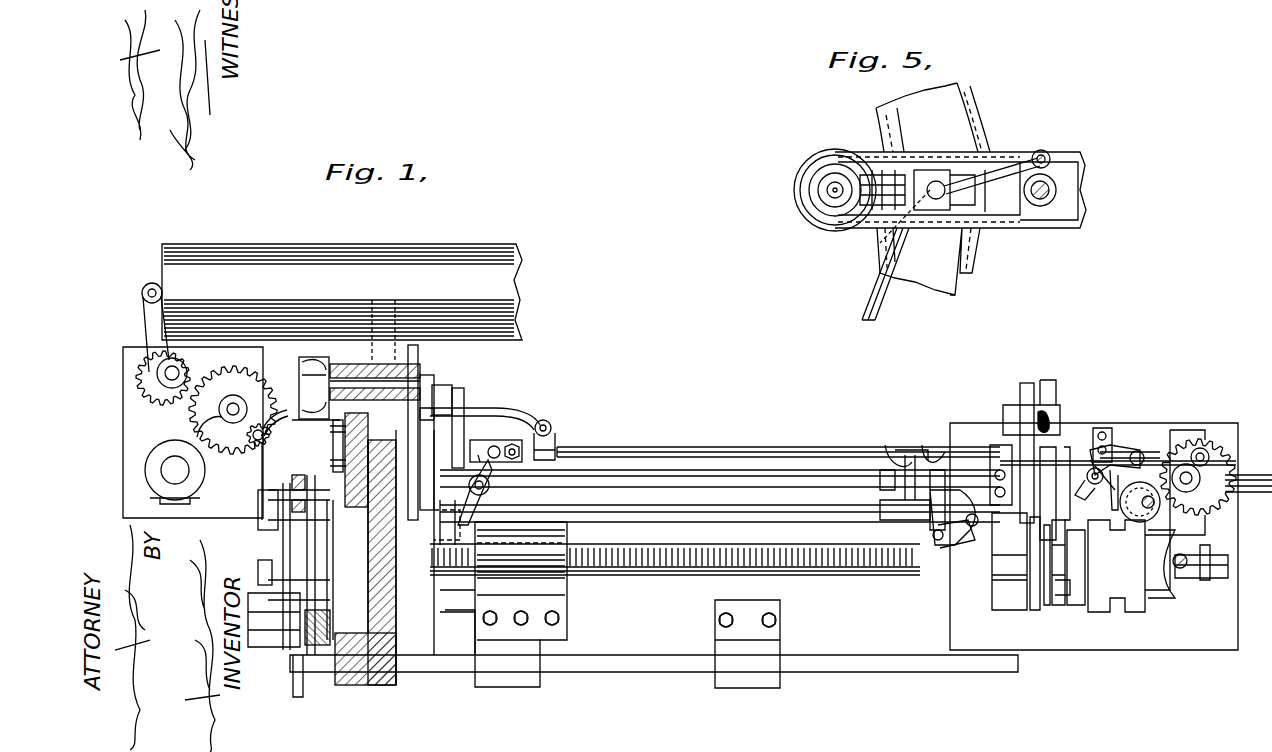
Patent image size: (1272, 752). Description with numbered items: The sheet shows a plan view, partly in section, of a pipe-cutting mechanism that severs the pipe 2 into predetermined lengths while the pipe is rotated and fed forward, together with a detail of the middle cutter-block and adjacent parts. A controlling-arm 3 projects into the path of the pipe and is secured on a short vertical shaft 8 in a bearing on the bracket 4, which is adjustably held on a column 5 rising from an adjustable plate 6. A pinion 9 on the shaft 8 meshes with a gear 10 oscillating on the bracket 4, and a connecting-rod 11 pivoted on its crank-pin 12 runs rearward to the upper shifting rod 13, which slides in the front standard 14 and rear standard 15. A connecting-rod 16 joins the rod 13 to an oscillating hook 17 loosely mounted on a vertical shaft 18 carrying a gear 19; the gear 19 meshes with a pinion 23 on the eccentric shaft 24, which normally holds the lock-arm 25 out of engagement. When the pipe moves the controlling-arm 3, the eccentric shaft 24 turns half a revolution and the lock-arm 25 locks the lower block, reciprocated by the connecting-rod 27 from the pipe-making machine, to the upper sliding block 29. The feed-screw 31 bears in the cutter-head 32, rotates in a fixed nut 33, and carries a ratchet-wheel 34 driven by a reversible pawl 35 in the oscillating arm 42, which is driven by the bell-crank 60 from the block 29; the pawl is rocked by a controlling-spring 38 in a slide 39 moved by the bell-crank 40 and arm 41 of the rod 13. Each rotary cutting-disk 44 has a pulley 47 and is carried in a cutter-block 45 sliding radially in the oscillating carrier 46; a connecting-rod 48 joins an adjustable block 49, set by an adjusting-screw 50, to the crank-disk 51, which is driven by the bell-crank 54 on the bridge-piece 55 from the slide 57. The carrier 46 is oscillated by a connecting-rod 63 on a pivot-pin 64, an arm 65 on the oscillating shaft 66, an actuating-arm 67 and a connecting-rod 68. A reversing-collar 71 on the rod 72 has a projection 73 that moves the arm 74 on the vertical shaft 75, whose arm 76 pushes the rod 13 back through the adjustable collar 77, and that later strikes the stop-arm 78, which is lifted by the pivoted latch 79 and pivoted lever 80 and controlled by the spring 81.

In FIG. 1, the pipe 2 is at (342, 302).
In FIG. 1, the controlling-arm 3 is at (148, 319).
In FIG. 1, the bracket 4 is at (166, 430).
In FIG. 1, the column 5 is at (170, 478).
In FIG. 1, the adjustable plate 6 is at (187, 490).
In FIG. 1, the vertical shaft 8 is at (173, 381).
In FIG. 1, the pinion 9 is at (152, 392).
In FIG. 1, the gear 10 is at (233, 410).
In FIG. 1, the connecting-rod 11 is at (486, 414).
In FIG. 1, the crank-pin 12 is at (277, 465).
In FIG. 1, the shifting rod 13 is at (660, 452).
In FIG. 1, the front standard 14 is at (460, 410).
In FIG. 1, the rear standard 15 is at (1100, 612).
In FIG. 1, the connecting-rod 16 is at (1150, 452).
In FIG. 1, the oscillating hook 17 is at (1205, 448).
In FIG. 1, the vertical shaft 18 is at (1186, 492).
In FIG. 1, the gear 19 is at (1212, 492).
In FIG. 1, the pinion 23 is at (1158, 580).
In FIG. 1, the eccentric shaft 24 is at (1140, 450).
In FIG. 1, the lock-arm 25 is at (1175, 598).
In FIG. 1, the connecting-rod 27 is at (1188, 582).
In FIG. 1, the upper sliding block 29 is at (1116, 566).
In FIG. 1, the feed-screw 31 is at (648, 576).
In FIG. 1, the cutter-head 32 is at (365, 571).
In FIG. 5, the cutter-head 32 is at (975, 254).
In FIG. 1, the fixed nut 33 is at (565, 598).
In FIG. 1, the ratchet-wheel 34 is at (1060, 610).
In FIG. 1, the reversible pawl 35 is at (1035, 580).
In FIG. 1, the controlling-spring 38 is at (1055, 592).
In FIG. 1, the slide 39 is at (1052, 470).
In FIG. 1, the bell-crank 40 is at (1100, 452).
In FIG. 1, the arm 41 is at (1117, 495).
In FIG. 1, the oscillating arm 42 is at (1050, 590).
In FIG. 1, the rotary cutting-disk 44 is at (418, 352).
In FIG. 5, the rotary cutting-disk 44 is at (800, 200).
In FIG. 1, the cutter-block 45 is at (340, 446).
In FIG. 5, the cutter-block 45 is at (870, 168).
In FIG. 1, the oscillating carrier 46 is at (365, 505).
In FIG. 5, the oscillating carrier 46 is at (933, 189).
In FIG. 1, the pulley 47 is at (300, 374).
In FIG. 5, the pulley 47 is at (818, 205).
In FIG. 1, the connecting-rod 48 is at (290, 560).
In FIG. 5, the connecting-rod 48 is at (1048, 152).
In FIG. 1, the adjustable block 49 is at (325, 455).
In FIG. 5, the adjustable block 49 is at (992, 152).
In FIG. 5, the adjusting-screw 50 is at (926, 192).
In FIG. 1, the crank-disk 51 is at (290, 605).
In FIG. 1, the bell-crank 54 is at (288, 530).
In FIG. 1, the bridge-piece 55 is at (318, 471).
In FIG. 1, the slide 57 is at (315, 683).
In FIG. 1, the bell-crank 60 is at (998, 578).
In FIG. 1, the connecting-rod 63 is at (450, 432).
In FIG. 5, the connecting-rod 63 is at (868, 293).
In FIG. 1, the pivot-pin 64 is at (432, 512).
In FIG. 1, the arm 65 is at (440, 400).
In FIG. 1, the oscillating shaft 66 is at (574, 478).
In FIG. 1, the actuating-arm 67 is at (1020, 390).
In FIG. 1, the connecting-rod 68 is at (1046, 420).
In FIG. 1, the reversing-collar 71 is at (933, 507).
In FIG. 1, the rod 72 is at (688, 516).
In FIG. 1, the projection 73 is at (885, 518).
In FIG. 1, the arm 74 is at (472, 502).
In FIG. 1, the vertical shaft 75 is at (518, 480).
In FIG. 1, the arm 76 is at (496, 440).
In FIG. 1, the adjustable collar 77 is at (522, 438).
In FIG. 1, the stop-arm 78 is at (907, 456).
In FIG. 1, the pivoted latch 79 is at (880, 480).
In FIG. 1, the pivoted lever 80 is at (945, 560).
In FIG. 1, the spring 81 is at (980, 460).